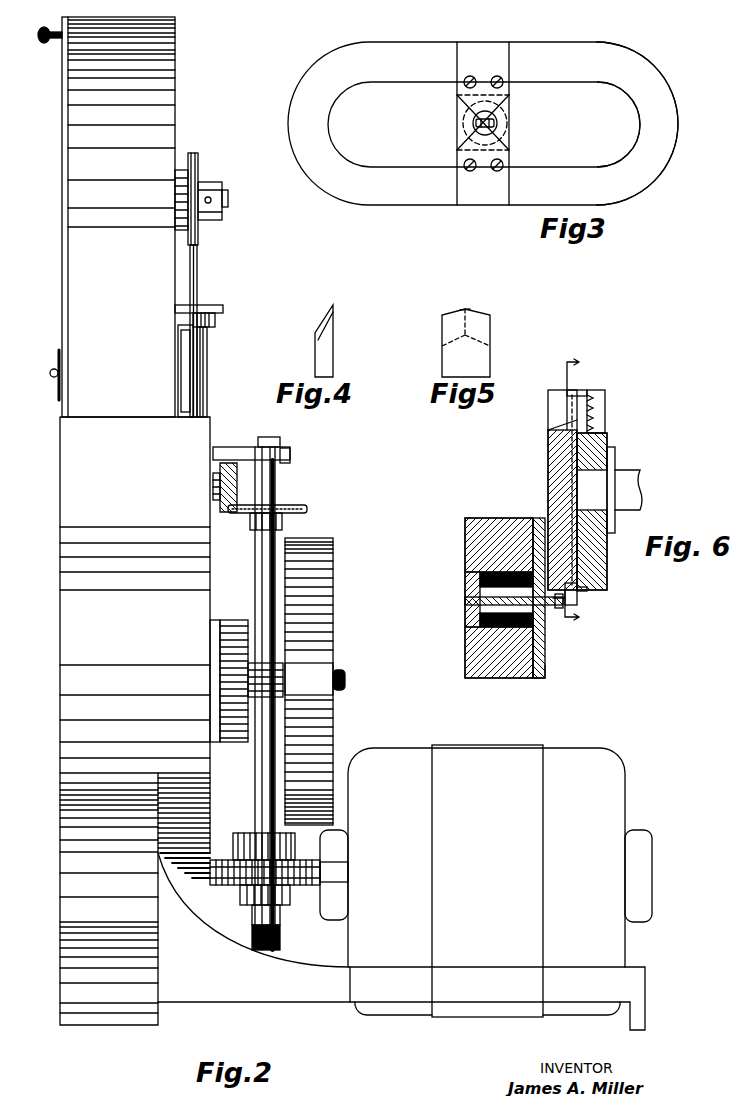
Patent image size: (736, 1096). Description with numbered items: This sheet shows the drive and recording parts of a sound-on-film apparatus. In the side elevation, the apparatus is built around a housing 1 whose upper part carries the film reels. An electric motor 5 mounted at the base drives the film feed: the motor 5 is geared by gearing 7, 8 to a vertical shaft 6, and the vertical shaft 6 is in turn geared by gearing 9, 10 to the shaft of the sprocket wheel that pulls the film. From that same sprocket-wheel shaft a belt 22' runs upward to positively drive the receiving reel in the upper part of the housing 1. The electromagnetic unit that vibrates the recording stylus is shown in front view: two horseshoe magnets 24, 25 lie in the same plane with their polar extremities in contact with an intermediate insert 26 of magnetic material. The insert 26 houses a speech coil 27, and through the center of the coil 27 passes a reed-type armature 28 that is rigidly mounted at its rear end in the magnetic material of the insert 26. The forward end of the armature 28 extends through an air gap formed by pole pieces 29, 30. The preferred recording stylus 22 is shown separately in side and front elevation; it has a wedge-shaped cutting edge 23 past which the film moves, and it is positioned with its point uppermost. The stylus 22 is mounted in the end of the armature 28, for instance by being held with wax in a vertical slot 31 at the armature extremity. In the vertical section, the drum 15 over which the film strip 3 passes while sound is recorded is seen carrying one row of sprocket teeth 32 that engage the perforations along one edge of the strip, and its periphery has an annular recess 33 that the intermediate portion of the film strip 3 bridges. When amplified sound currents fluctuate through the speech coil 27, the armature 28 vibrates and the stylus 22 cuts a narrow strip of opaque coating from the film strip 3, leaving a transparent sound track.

In FIG. 2, the housing 1 is at (64, 635).
In FIG. 2, the belt 22' is at (203, 285).
In FIG. 2, the vertical shaft 6 is at (252, 579).
In FIG. 2, the gearing 9 is at (234, 468).
In FIG. 2, the gearing 10 is at (303, 505).
In FIG. 2, the gearing 8 is at (260, 860).
In FIG. 2, the gearing 7 is at (238, 883).
In FIG. 6, the gearing 7 is at (579, 492).
In FIG. 2, the electric motor 5 is at (353, 938).
In FIG. 3, the horseshoe magnet 24 is at (311, 181).
In FIG. 3, the horseshoe magnet 25 is at (651, 186).
In FIG. 3, the pole piece 29 is at (510, 92).
In FIG. 6, the pole piece 29 is at (533, 518).
In FIG. 3, the pole piece 30 is at (511, 158).
In FIG. 6, the pole piece 30 is at (540, 669).
In FIG. 4, the recording stylus 22 is at (306, 341).
In FIG. 5, the recording stylus 22 is at (452, 343).
In FIG. 6, the recording stylus 22 is at (584, 597).
In FIG. 5, the wedge-shaped cutting edge 23 is at (465, 311).
In FIG. 6, the intermediate insert 26 is at (465, 535).
In FIG. 6, the speech coil 27 is at (481, 573).
In FIG. 6, the armature 28 is at (470, 598).
In FIG. 6, the drum 15 is at (548, 456).
In FIG. 6, the film strip 3 is at (601, 590).
In FIG. 6, the sprocket teeth 32 is at (600, 408).
In FIG. 6, the annular recess 33 is at (588, 390).
In FIG. 6, the vertical slot 31 is at (552, 598).